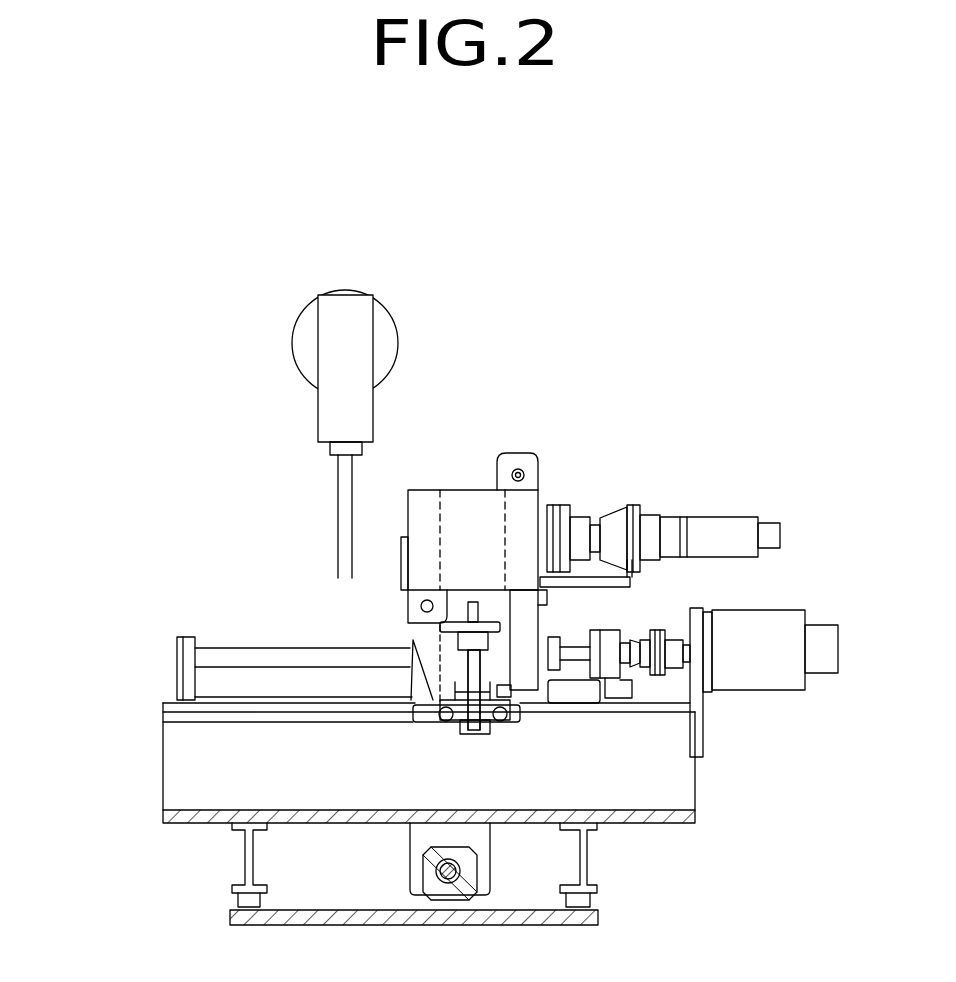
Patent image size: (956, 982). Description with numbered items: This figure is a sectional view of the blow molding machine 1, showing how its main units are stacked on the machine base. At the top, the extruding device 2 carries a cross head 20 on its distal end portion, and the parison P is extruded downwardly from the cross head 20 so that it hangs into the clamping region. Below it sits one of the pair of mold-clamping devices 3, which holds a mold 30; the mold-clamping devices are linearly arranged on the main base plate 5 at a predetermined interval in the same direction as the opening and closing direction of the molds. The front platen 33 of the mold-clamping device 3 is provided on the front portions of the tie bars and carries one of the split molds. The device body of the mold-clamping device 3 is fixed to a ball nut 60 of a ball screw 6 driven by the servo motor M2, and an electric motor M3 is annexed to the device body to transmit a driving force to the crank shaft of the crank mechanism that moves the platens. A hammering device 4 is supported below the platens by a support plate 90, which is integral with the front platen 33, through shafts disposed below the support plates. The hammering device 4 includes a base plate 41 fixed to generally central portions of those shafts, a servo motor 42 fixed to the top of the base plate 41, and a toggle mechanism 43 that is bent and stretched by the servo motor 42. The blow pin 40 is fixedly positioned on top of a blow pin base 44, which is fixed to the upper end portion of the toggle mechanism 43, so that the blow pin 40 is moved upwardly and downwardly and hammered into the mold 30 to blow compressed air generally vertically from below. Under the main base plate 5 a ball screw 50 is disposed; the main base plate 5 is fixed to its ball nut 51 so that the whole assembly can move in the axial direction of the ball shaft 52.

The blow molding machine 1 is at (492, 385).
The extruding device 2 is at (308, 328).
The cross head 20 is at (333, 406).
The parison P is at (342, 493).
The mold-clamping device 3 is at (556, 470).
The mold 30 is at (438, 490).
The front platen 33 is at (487, 482).
The blow pin 40 is at (438, 588).
The base plate 41 is at (482, 738).
The servo motor 42 is at (596, 707).
The toggle mechanism 43 is at (412, 728).
The blow pin base 44 is at (438, 612).
The hammering device 4 is at (413, 637).
The main base plate 5 is at (160, 762).
The ball screw 50 is at (410, 846).
The ball nut 51 is at (410, 865).
The ball shaft 52 is at (462, 866).
The ball screw 6 is at (242, 645).
The ball nut 60 is at (548, 632).
The support plate 90 is at (508, 642).
The servo motor M2 is at (778, 606).
The electric motor M3 is at (712, 520).